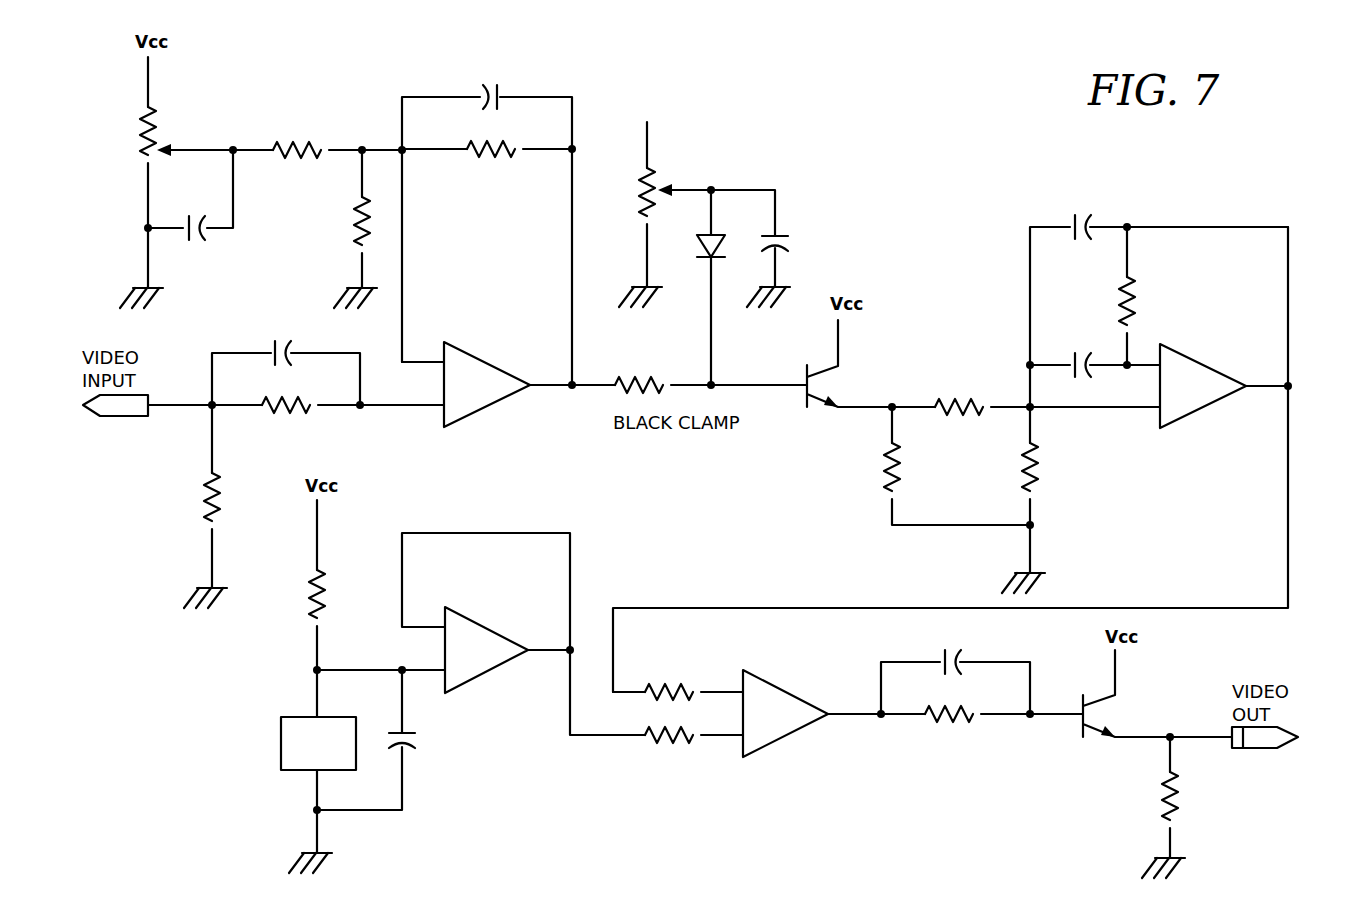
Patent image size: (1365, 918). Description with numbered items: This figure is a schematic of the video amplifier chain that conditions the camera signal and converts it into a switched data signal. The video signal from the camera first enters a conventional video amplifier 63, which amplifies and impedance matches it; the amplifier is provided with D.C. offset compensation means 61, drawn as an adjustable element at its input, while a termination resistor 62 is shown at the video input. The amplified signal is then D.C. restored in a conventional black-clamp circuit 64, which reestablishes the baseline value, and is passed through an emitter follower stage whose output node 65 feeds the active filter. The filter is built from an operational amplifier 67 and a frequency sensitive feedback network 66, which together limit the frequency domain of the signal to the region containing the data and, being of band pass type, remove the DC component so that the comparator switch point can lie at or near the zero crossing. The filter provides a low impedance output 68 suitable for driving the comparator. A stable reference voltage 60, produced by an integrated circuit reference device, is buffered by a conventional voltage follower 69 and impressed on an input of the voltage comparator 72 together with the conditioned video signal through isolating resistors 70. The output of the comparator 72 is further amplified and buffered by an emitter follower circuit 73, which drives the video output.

The voltage 60 is at (314, 668).
The D.C. offset compensation means 61 is at (160, 132).
The input termination resistor 62 is at (207, 498).
The video amplifier 63 is at (476, 356).
The black-clamp circuit 64 is at (714, 190).
The emitter follower output node 65 is at (892, 404).
The frequency sensitive feedback network 66 is at (1130, 226).
The operational amplifier 67 is at (1190, 358).
The low impedance output 68 is at (1290, 384).
The voltage follower 69 is at (475, 620).
The isolating resistor 70 is at (680, 688).
The voltage comparator 72 is at (775, 684).
The emitter follower circuit 73 is at (1170, 734).